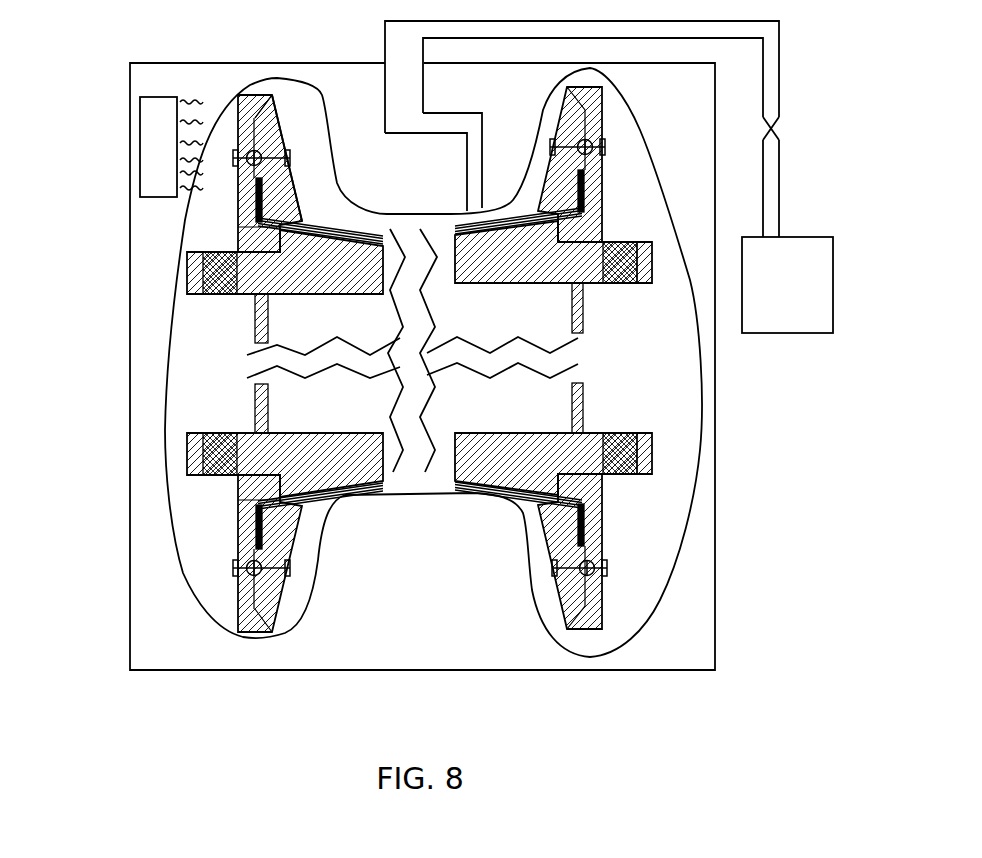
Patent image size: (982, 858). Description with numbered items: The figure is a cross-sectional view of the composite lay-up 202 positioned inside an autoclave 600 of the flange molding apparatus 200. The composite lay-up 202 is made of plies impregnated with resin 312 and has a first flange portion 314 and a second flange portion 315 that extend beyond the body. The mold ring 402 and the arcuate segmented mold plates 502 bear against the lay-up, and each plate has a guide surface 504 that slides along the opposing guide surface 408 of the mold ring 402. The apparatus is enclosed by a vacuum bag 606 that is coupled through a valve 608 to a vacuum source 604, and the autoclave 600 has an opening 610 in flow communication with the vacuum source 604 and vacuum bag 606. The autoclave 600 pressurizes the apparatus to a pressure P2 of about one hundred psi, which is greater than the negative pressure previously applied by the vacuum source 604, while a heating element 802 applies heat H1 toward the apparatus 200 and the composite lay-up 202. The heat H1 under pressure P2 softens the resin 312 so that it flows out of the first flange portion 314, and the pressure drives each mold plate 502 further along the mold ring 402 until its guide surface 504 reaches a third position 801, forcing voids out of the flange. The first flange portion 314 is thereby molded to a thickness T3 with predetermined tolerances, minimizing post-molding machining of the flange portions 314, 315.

The flange molding apparatus 200 is at (624, 144).
The composite lay-up 202 is at (402, 212).
The resin 312 is at (253, 221).
The first flange portion 314 is at (248, 178).
The second flange portion 315 is at (584, 197).
The mold ring 402 is at (237, 183).
The guide surface 408 is at (194, 106).
The arcuate segmented mold plate 502 is at (280, 129).
The guide surface 504 is at (268, 106).
The autoclave 600 is at (331, 672).
The vacuum source 604 is at (815, 237).
The vacuum bag 606 is at (657, 607).
The valve 608 is at (778, 128).
The opening 610 is at (405, 52).
The third position 801 is at (322, 216).
The heating element 802 is at (140, 116).
The heat H1 is at (179, 100).
The pressure P2 is at (640, 533).
The thickness T3 is at (533, 185).